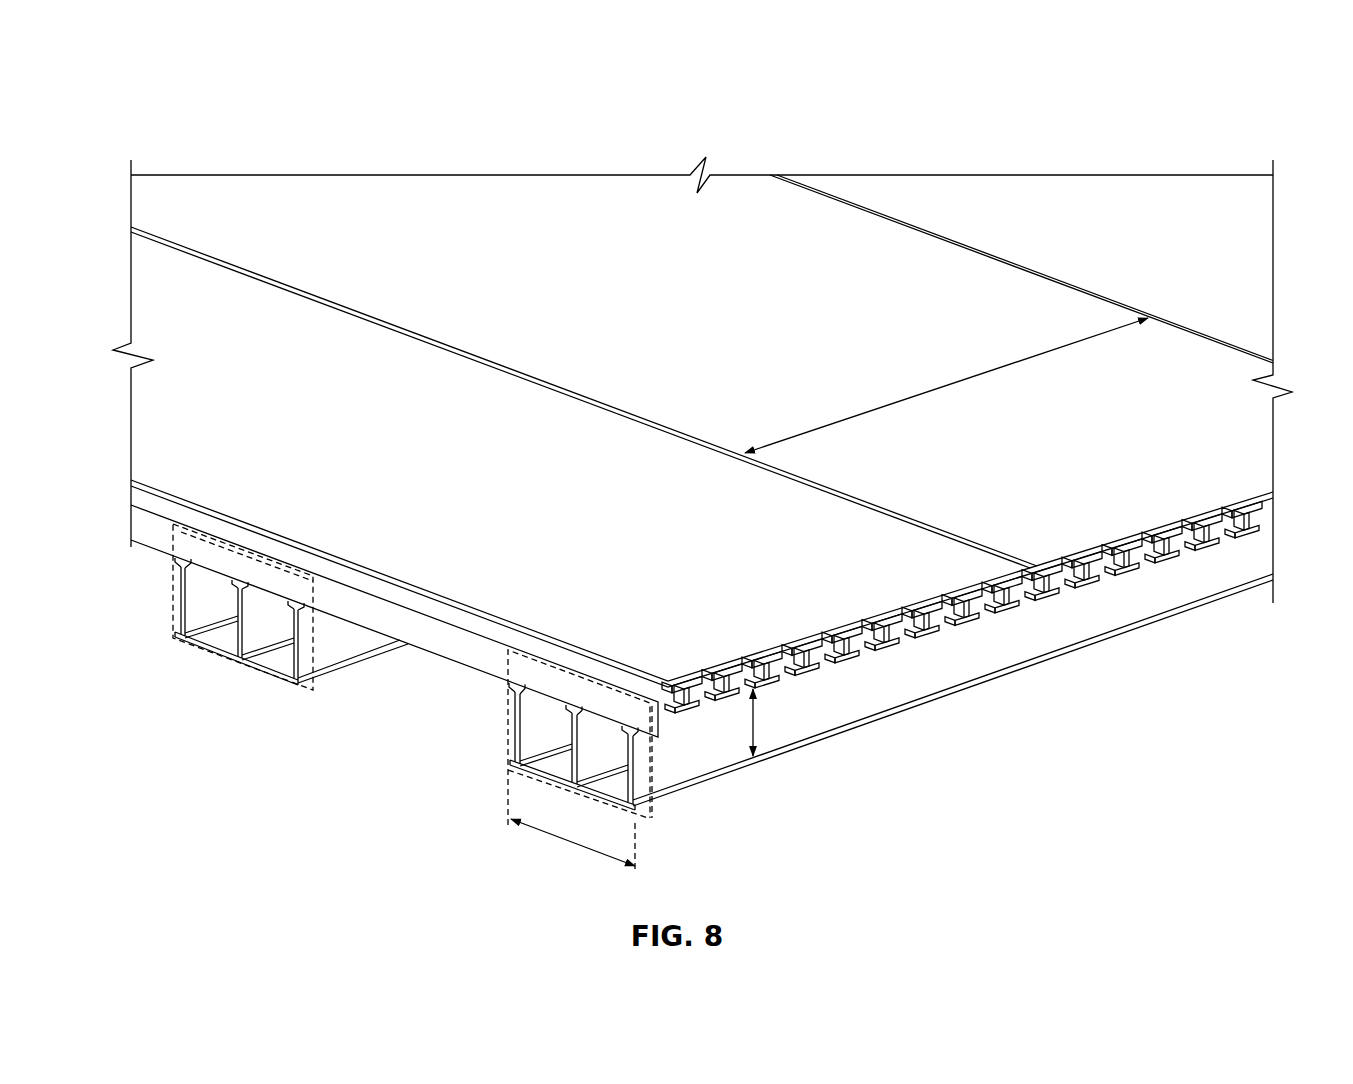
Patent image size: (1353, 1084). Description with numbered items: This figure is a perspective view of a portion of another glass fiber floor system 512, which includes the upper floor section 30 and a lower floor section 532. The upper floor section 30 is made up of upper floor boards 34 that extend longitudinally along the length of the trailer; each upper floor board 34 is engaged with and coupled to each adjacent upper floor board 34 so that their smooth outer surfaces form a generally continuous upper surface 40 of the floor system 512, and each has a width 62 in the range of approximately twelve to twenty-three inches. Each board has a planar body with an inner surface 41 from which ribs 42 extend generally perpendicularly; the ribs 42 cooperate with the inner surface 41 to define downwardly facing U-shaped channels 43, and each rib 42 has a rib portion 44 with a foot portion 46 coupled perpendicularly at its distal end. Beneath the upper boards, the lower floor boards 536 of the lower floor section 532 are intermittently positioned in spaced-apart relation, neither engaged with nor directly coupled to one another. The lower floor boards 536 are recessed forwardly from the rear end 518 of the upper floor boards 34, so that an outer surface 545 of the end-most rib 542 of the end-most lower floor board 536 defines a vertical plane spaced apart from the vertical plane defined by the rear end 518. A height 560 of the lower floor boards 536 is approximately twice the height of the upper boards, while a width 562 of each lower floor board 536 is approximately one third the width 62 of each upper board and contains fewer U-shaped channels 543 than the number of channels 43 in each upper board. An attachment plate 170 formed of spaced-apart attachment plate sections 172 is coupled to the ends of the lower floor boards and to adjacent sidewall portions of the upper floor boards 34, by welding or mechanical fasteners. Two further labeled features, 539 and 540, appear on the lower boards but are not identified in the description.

The floor system 512 is at (223, 114).
The upper floor section 30 is at (1190, 372).
The outer surface 40 is at (1040, 224).
The upper floor boards 34 is at (363, 332).
The width 62 is at (943, 386).
The lower floor boards 536 is at (336, 641).
The rib portion 44 is at (953, 677).
The outer surface 545 is at (1205, 602).
The inner surface 41 is at (710, 607).
The ribs 42 is at (991, 603).
The U-shaped channels 43 is at (836, 660).
The end-most rib 542 is at (1071, 625).
The U-shaped channels 543 is at (201, 608).
The rear end 518 is at (1278, 506).
The foot portion 46 is at (1256, 529).
The height 560 is at (756, 716).
The attachment plate 170 is at (319, 687).
The attachment plate sections 172 is at (313, 690).
The bottom flange 540 is at (259, 669).
The bottom plate 539 is at (281, 682).
The lower floor section 532 is at (214, 655).
The width 562 is at (575, 846).